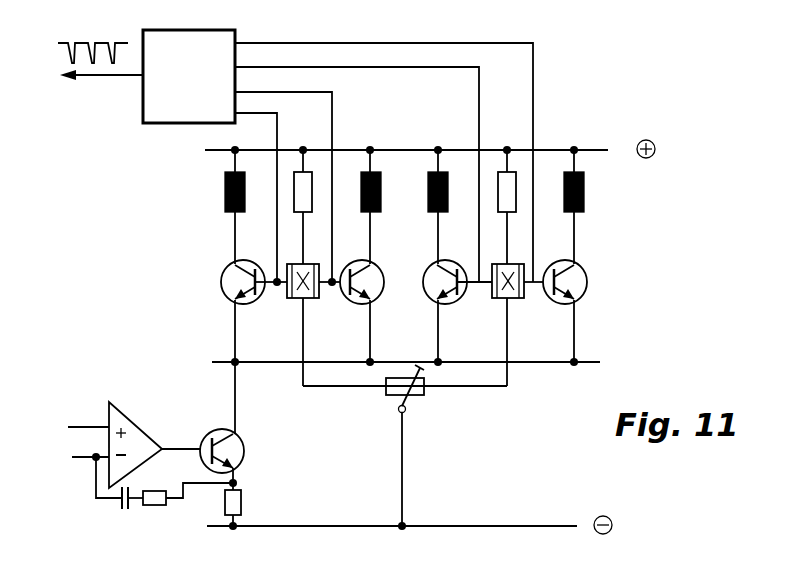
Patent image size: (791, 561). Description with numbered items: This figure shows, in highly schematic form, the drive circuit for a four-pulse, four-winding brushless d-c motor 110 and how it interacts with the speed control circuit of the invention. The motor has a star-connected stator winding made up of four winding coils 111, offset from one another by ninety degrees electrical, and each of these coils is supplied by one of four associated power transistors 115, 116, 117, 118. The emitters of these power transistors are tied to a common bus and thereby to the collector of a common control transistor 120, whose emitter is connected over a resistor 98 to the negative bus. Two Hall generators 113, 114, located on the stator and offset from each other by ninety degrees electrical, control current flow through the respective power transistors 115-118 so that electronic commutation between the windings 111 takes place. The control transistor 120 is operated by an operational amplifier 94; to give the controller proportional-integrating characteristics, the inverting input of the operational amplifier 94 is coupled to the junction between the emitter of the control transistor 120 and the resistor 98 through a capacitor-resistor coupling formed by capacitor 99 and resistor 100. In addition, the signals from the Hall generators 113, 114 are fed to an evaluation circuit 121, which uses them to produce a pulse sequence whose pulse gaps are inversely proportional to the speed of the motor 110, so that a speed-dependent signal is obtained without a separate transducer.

The evaluation circuit 121 is at (198, 85).
The winding coils 111 is at (225, 195).
The brushless d-c motor 110 is at (186, 242).
The power transistor 115 is at (224, 284).
The Hall generator 113 is at (300, 291).
The power transistor 116 is at (382, 296).
The power transistor 117 is at (432, 278).
The Hall generator 114 is at (498, 300).
The power transistor 118 is at (586, 286).
The operational amplifier 94 is at (118, 426).
The control transistor 120 is at (244, 449).
The resistor 98 is at (241, 497).
The capacitor 99 is at (124, 511).
The resistor 100 is at (157, 506).